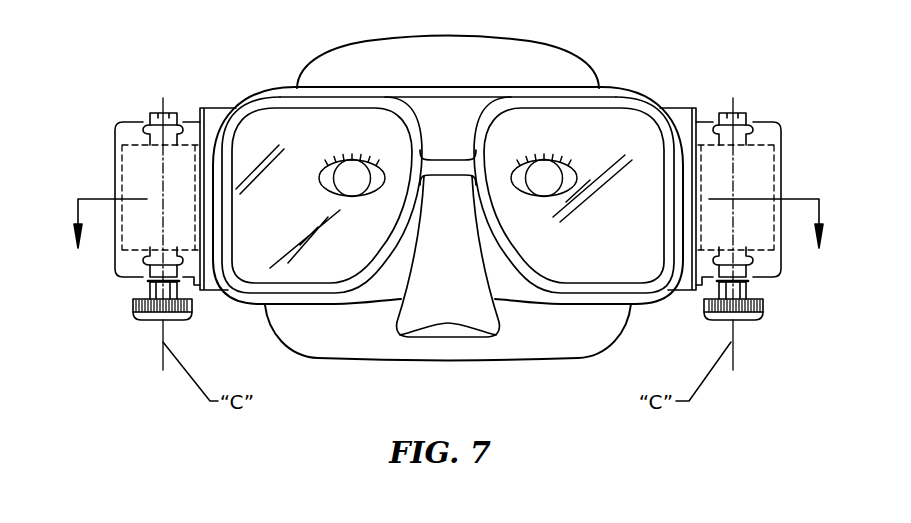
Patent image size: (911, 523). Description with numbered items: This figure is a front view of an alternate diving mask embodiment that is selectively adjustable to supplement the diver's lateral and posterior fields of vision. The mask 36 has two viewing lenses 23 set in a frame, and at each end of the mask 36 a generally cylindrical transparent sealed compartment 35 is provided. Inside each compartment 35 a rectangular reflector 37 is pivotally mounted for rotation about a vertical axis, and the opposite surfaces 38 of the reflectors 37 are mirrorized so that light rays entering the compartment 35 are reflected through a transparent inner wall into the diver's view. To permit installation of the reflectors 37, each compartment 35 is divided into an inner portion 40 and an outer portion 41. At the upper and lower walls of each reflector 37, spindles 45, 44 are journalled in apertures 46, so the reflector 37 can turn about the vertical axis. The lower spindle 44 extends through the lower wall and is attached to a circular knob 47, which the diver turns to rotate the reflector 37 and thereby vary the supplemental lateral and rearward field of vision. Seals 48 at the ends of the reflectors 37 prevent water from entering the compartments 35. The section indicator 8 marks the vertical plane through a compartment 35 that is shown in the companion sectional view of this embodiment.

The section view indicator 8 is at (451, 206).
The lens 23 is at (353, 158).
The transparent sealed compartment 35 is at (115, 248).
The mask 36 is at (283, 472).
The rectangular reflector 37 is at (140, 272).
The mirrorized surface 38 is at (196, 176).
The inner portion 40 is at (200, 118).
The outer portion 41 is at (185, 120).
The lower spindle 44 is at (150, 115).
The upper spindle 45 is at (148, 303).
The aperture 46 is at (187, 312).
The circular knob 47 is at (157, 317).
The seal 48 is at (133, 125).